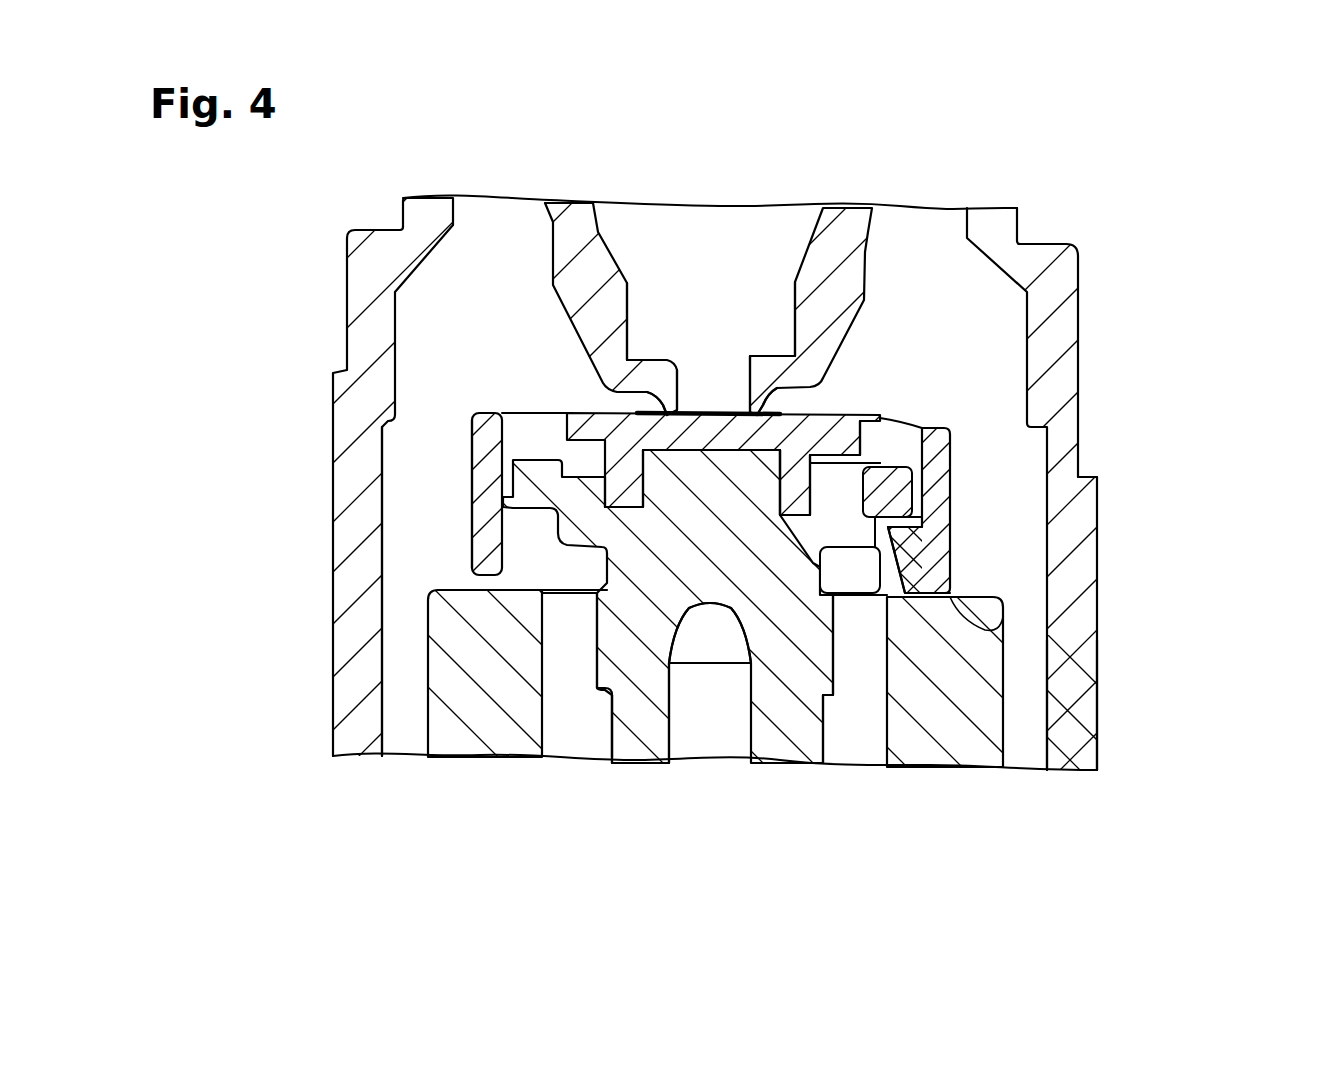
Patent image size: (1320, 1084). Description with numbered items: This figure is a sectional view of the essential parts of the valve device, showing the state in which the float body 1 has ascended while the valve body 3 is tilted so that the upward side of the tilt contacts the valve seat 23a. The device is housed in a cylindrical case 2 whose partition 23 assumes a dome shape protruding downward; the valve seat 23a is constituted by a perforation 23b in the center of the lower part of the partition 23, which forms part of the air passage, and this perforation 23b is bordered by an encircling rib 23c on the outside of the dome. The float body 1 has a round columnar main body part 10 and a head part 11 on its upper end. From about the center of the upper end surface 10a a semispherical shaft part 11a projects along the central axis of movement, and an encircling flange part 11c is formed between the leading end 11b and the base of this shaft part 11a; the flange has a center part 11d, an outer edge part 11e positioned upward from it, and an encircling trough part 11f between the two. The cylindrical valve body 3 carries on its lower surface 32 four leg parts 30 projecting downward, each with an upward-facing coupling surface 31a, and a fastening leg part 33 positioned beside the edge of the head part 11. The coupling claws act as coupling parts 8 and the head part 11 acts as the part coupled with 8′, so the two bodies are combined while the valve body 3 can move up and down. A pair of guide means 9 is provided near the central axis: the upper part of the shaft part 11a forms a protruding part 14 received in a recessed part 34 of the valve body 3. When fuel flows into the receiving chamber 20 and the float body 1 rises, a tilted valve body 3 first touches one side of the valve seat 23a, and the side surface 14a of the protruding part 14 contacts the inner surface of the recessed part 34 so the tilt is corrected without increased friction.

The float body 1 is at (993, 717).
The cylindrical case 2 is at (343, 700).
The valve body 3 is at (947, 443).
The coupling parts 8 is at (950, 562).
The parts coupled with 8′ is at (947, 480).
The guide means 9 is at (823, 412).
The main body part 10 is at (987, 663).
The upper end surface 10a is at (957, 650).
The head part 11 is at (722, 530).
The shaft part 11a is at (693, 477).
The leading end 11b is at (710, 607).
The encircling flange part 11c is at (858, 510).
The center part 11d is at (853, 505).
The outer edge part 11e is at (868, 470).
The encircling trough part 11f is at (577, 640).
The protruding part 14 is at (683, 457).
The side surface 14a is at (752, 565).
The receiving chamber 20 is at (403, 623).
The partition 23 is at (565, 262).
The valve seat 23a is at (750, 393).
The perforation 23b is at (712, 368).
The encircling rib 23c is at (670, 396).
The leg parts 30 is at (473, 453).
The coupling surface 31a is at (915, 575).
The lower surface 32 is at (837, 426).
The fastening leg part 33 is at (472, 525).
The recessed part 34 is at (617, 415).